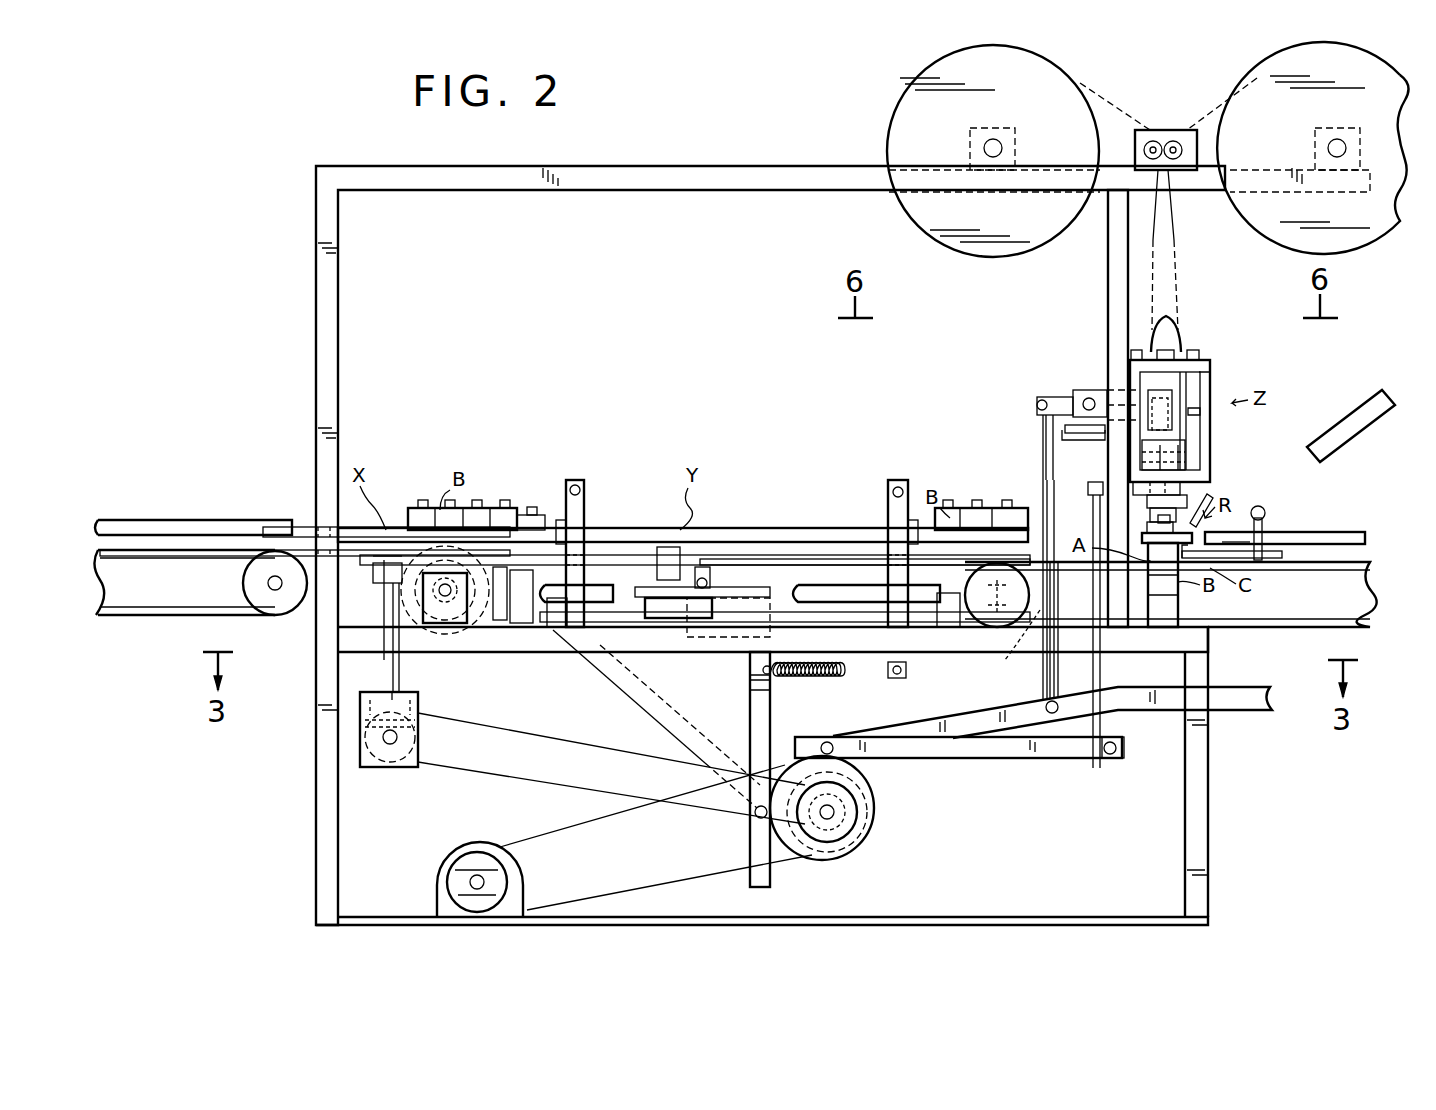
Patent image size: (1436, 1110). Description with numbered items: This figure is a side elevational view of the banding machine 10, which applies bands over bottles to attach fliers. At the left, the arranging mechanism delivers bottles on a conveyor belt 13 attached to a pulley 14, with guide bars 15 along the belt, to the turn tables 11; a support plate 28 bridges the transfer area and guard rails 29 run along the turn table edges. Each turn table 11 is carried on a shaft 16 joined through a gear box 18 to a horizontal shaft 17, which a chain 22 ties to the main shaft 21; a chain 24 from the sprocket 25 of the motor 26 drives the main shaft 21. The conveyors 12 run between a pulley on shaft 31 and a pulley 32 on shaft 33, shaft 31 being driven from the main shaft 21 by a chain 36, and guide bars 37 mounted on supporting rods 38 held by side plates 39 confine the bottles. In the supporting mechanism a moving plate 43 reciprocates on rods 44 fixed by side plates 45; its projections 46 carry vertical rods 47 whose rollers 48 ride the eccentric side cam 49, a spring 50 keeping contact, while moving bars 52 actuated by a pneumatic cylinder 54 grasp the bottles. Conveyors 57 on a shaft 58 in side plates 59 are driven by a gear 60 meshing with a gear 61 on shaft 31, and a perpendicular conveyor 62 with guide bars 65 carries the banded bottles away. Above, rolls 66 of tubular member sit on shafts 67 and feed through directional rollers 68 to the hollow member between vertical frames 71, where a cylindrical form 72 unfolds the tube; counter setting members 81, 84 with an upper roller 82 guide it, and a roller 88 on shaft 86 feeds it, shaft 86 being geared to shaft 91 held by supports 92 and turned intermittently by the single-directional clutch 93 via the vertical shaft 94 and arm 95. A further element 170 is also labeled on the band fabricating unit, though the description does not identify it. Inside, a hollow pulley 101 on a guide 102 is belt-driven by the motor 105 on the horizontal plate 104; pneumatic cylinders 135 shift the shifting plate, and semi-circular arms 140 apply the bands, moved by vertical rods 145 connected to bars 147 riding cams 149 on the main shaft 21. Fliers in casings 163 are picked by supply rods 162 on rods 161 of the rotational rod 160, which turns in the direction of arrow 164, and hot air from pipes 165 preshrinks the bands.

The banding machine 10 is at (298, 300).
The turn table 11 is at (382, 535).
The conveyor 12 is at (598, 555).
The conveyor belt 13 is at (158, 616).
The pulley 14 is at (276, 598).
The guide bars 15 is at (186, 525).
The shaft 16 is at (400, 675).
The horizontal shaft 17 is at (384, 738).
The gear box 18 is at (410, 706).
The main shaft 21 is at (834, 814).
The chain 22 is at (506, 775).
The chain 24 is at (700, 870).
The sprocket 25 is at (458, 890).
The motor 26 is at (448, 862).
The support plate 28 is at (375, 568).
The guard rails 29 is at (292, 525).
The shaft 31 is at (448, 598).
The pulley 32 is at (1012, 645).
The shaft 33 is at (982, 662).
The chain 36 is at (652, 736).
The guide bars 37 is at (640, 528).
The supporting rods 38 is at (575, 482).
The side plates 39 is at (556, 522).
The moving plate 43 is at (636, 592).
The rods 44 is at (618, 622).
The side plates 45 is at (558, 628).
The projections 46 is at (748, 600).
The vertical rod 47 is at (798, 736).
The roller 48 is at (760, 818).
The side cam 49 is at (808, 860).
The spring 50 is at (852, 672).
The moving bars 52 is at (828, 560).
The pneumatic cylinder 54 is at (704, 580).
The conveyor 57 is at (1180, 610).
The shaft 58 is at (553, 604).
The side plates 59 is at (522, 625).
The gear 60 is at (500, 620).
The gear 61 is at (383, 660).
The conveyor 62 is at (1290, 632).
The guide bars 65 is at (1345, 535).
The rolls 66 is at (976, 236).
The shafts 67 is at (975, 142).
The directional rollers 68 is at (1190, 130).
The vertical frames 71 is at (1108, 324).
The cylindrical form 72 is at (1166, 320).
The counter setting members 81 is at (1198, 352).
The upper roller 82 is at (1131, 355).
The counter setting members 84 is at (1172, 350).
The shaft 86 is at (1175, 405).
The roller 88 is at (1210, 366).
The shaft 91 is at (1046, 420).
The supports 92 is at (1075, 392).
The single-directional clutch 93 is at (1045, 398).
The vertical shaft 94 is at (1043, 462).
The arm 95 is at (958, 722).
The hollow pulley 101 is at (1185, 450).
The guide 102 is at (1180, 466).
The horizontal plate 104 is at (1200, 411).
The motor 105 is at (1104, 432).
The pneumatic cylinders 135 is at (1062, 434).
The semi-circular arms 140 is at (1052, 506).
The vertical rods 145 is at (1124, 740).
The bars 147 is at (1012, 758).
The cam 149 is at (866, 780).
The rotational rod 160 is at (1265, 512).
The rods 161 is at (1262, 530).
The supply rods 162 is at (1275, 558).
The casings 163 is at (1366, 415).
The arrow 164 is at (1250, 540).
The pipes 165 is at (1205, 500).
The housing flange 170 is at (1206, 366).